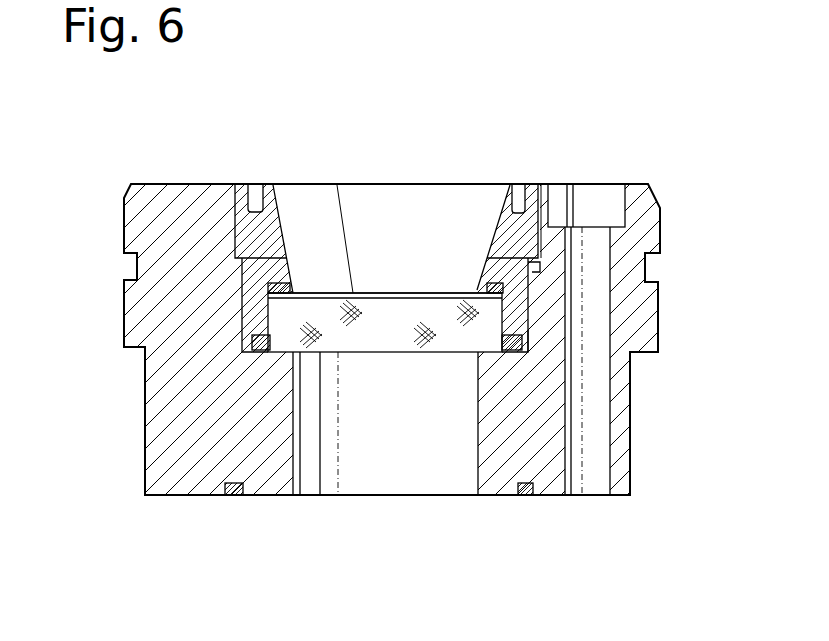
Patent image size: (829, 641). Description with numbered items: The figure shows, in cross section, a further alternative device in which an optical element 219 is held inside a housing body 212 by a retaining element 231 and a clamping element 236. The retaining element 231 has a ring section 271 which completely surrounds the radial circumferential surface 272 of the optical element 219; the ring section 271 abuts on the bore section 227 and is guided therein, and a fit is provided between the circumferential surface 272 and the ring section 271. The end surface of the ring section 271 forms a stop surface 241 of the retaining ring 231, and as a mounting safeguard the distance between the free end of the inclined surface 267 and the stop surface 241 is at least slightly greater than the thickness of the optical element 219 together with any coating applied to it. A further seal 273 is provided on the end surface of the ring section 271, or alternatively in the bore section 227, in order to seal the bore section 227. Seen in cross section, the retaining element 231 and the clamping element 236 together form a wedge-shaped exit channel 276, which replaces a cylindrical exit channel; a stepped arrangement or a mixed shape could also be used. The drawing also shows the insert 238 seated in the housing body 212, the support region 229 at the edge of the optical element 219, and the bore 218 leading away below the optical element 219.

The housing body 212 is at (168, 428).
The outlet bore 218 is at (295, 365).
The optical element 219 is at (387, 328).
The bore section 227 is at (206, 306).
The filter support rim 229 is at (283, 287).
The retaining element 231 is at (532, 272).
The clamping element 236 is at (240, 187).
The insert 238 is at (208, 221).
The stop surface 241 is at (530, 347).
The inclined surface 267 is at (500, 258).
The ring section 271 is at (518, 313).
The radial circumferential surface 272 is at (492, 315).
The further seal 273 is at (513, 353).
The exit channel 276 is at (313, 293).